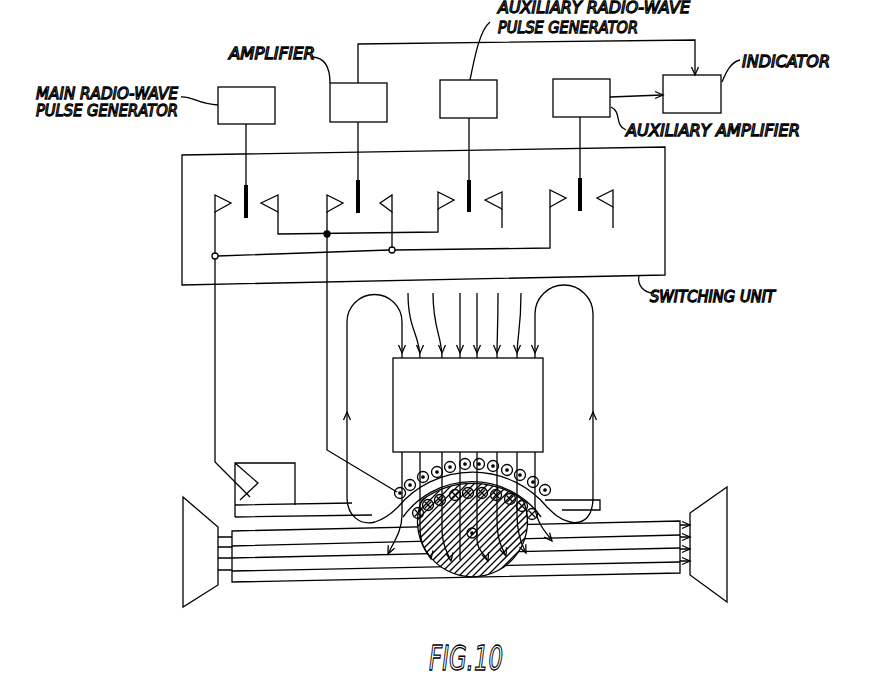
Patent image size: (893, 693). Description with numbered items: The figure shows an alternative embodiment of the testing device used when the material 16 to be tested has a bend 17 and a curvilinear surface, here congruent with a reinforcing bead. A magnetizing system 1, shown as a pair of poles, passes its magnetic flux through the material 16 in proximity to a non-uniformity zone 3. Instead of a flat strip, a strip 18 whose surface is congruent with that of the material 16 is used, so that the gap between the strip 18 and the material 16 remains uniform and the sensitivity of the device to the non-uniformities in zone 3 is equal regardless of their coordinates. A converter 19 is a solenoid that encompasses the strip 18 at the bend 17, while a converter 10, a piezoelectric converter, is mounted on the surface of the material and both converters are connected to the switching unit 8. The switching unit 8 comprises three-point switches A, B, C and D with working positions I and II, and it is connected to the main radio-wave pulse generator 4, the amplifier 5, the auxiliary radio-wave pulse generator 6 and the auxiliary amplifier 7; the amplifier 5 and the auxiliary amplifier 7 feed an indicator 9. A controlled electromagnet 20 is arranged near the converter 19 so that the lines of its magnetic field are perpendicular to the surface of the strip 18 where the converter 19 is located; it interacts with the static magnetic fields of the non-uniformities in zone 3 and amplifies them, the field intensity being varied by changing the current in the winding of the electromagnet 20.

The magnetizing system 1 is at (196, 500).
The non-uniformity zone 3 is at (457, 578).
The main radio-wave pulse generator 4 is at (246, 105).
The amplifier 5 is at (358, 102).
The auxiliary radio-wave pulse generator 6 is at (468, 99).
The auxiliary amplifier 7 is at (581, 98).
The switching unit 8 is at (665, 257).
The indicator 9 is at (692, 94).
The converter 10 is at (270, 463).
The material 16 is at (648, 527).
The bend 17 is at (503, 577).
The strip 18 is at (597, 501).
The converter 19 is at (549, 487).
The controlled electromagnet 20 is at (531, 399).